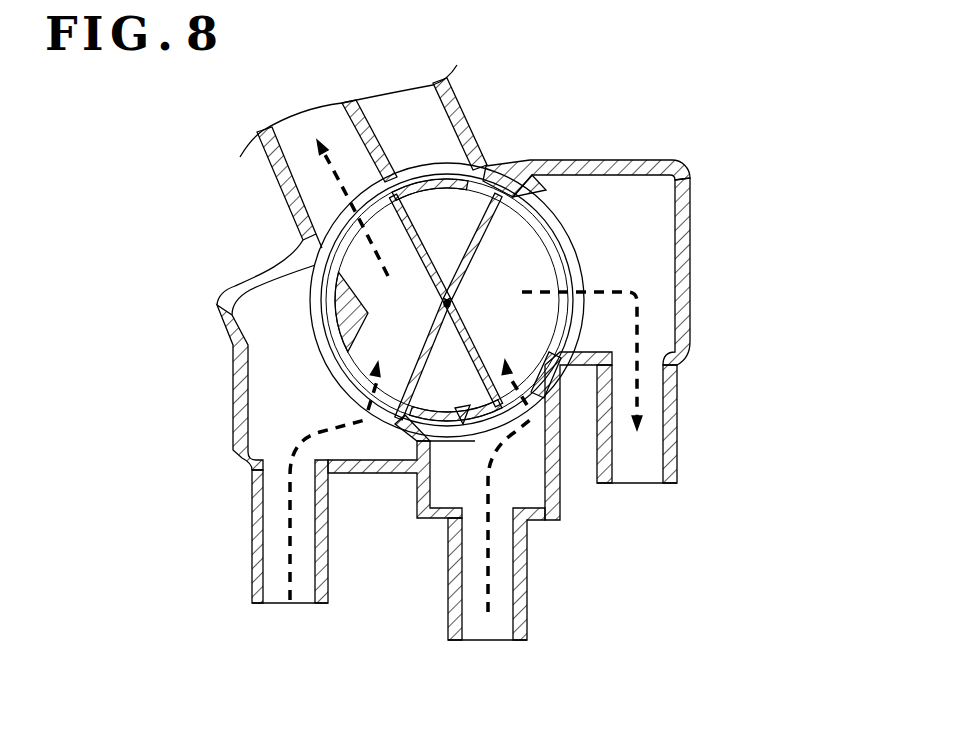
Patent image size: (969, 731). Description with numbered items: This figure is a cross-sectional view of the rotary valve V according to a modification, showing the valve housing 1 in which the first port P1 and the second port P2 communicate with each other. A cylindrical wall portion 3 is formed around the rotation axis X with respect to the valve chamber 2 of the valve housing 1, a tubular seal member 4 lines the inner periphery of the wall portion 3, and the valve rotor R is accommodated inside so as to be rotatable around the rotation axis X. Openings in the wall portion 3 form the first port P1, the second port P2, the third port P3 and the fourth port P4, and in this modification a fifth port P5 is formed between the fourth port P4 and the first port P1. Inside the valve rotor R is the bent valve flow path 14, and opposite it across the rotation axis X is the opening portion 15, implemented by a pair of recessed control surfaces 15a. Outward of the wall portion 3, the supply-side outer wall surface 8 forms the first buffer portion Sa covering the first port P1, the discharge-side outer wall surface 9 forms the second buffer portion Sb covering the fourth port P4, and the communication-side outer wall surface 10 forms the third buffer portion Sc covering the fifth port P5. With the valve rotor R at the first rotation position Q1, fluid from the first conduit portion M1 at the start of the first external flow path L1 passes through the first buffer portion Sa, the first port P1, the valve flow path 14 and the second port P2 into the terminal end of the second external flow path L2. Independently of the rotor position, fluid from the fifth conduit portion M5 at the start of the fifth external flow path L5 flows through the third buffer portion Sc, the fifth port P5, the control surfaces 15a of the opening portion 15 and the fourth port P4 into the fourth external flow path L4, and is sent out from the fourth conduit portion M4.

The valve housing 1 is at (640, 160).
The valve chamber 2 is at (562, 200).
The wall portion 3 is at (556, 372).
The seal member 4 is at (548, 307).
The supply-side outer wall surface 8 is at (233, 376).
The discharge-side outer wall surface 9 is at (692, 272).
The communication-side outer wall surface 10 is at (556, 490).
The valve flow path 14 is at (397, 300).
The opening portion 15 is at (517, 268).
The control surfaces 15a is at (527, 188).
The first port P1 is at (313, 280).
The second port P2 is at (343, 224).
The third port P3 is at (430, 170).
The fourth port P4 is at (577, 268).
The fifth port P5 is at (465, 460).
The first external flow path L1 is at (290, 505).
The second external flow path L2 is at (328, 167).
The fourth external flow path L4 is at (640, 390).
The fifth external flow path L5 is at (488, 600).
The first conduit portion M1 is at (252, 548).
The fourth conduit portion M4 is at (677, 446).
The fifth conduit portion M5 is at (527, 605).
The first buffer portion Sa is at (328, 408).
The second buffer portion Sb is at (663, 223).
The third buffer portion Sc is at (523, 500).
The valve rotor R is at (316, 320).
The rotation axis X is at (527, 309).
The first rotation position Q1 is at (397, 420).
The rotary valve V is at (754, 136).